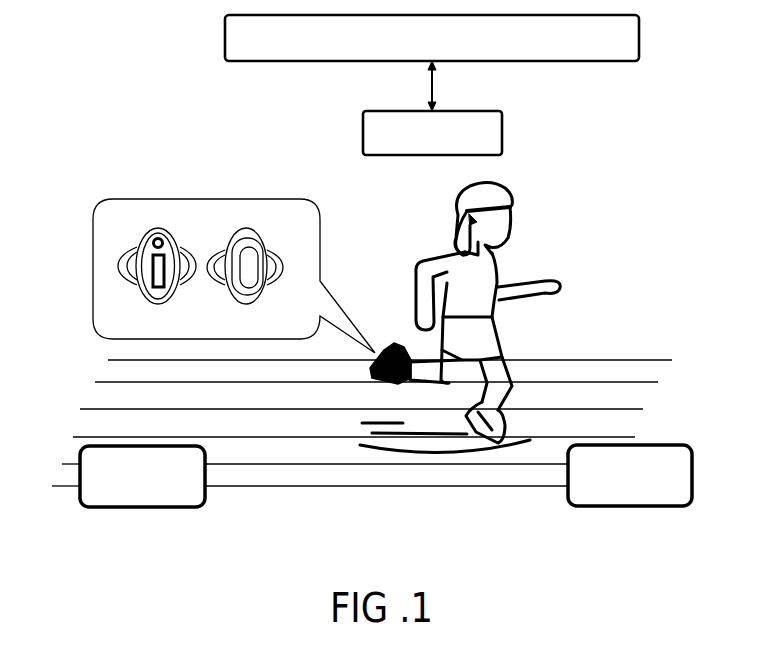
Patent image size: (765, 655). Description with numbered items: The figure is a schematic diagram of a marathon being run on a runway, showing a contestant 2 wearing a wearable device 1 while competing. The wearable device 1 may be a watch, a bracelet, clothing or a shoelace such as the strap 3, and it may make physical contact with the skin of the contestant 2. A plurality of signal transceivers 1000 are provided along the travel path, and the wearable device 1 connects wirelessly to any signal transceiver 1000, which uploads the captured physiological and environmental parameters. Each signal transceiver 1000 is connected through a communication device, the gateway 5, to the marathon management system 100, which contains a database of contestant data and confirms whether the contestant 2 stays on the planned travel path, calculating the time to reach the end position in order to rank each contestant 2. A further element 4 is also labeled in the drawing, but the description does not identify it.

The wearable device 1 is at (184, 220).
The contestant 2 is at (515, 218).
The strap 3 is at (390, 378).
The tag device 4 is at (121, 265).
The gateway 5 is at (432, 133).
The marathon management system 100 is at (432, 38).
The signal transceiver 1000 is at (386, 476).